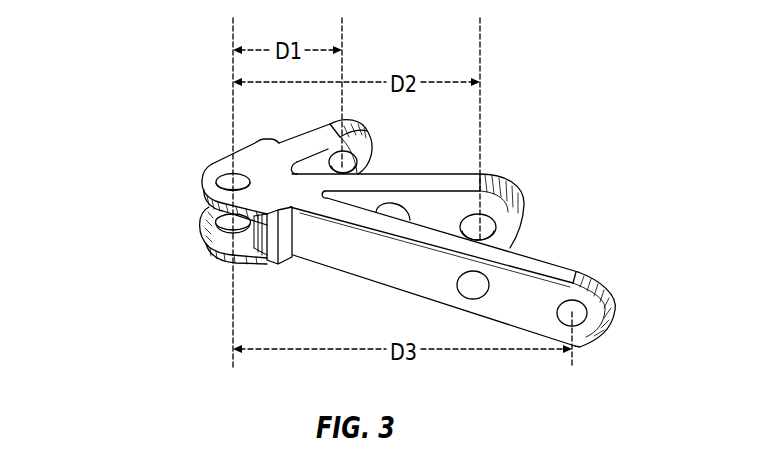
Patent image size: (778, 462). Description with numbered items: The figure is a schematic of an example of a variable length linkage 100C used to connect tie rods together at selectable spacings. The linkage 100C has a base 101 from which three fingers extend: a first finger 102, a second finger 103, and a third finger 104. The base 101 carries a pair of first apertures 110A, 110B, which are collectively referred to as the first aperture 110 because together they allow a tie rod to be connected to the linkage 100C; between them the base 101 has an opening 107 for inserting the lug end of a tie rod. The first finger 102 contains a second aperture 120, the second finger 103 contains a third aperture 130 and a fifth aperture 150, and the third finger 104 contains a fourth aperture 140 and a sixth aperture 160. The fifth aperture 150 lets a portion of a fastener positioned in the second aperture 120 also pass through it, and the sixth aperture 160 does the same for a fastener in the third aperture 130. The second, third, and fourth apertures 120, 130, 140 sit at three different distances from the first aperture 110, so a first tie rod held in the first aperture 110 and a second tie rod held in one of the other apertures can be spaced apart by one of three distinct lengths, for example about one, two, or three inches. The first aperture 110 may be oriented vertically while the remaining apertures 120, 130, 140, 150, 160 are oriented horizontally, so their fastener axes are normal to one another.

The variable length linkage 100C is at (157, 73).
The base 101 is at (253, 167).
The first finger 102 is at (330, 122).
The second finger 103 is at (452, 177).
The third finger 104 is at (550, 260).
The opening 107 is at (218, 231).
The first aperture 110 is at (140, 137).
The first aperture 110A is at (232, 178).
The first aperture 110B is at (233, 232).
The second aperture 120 is at (356, 160).
The third aperture 130 is at (496, 228).
The fourth aperture 140 is at (584, 313).
The fifth aperture 150 is at (393, 218).
The sixth aperture 160 is at (473, 290).